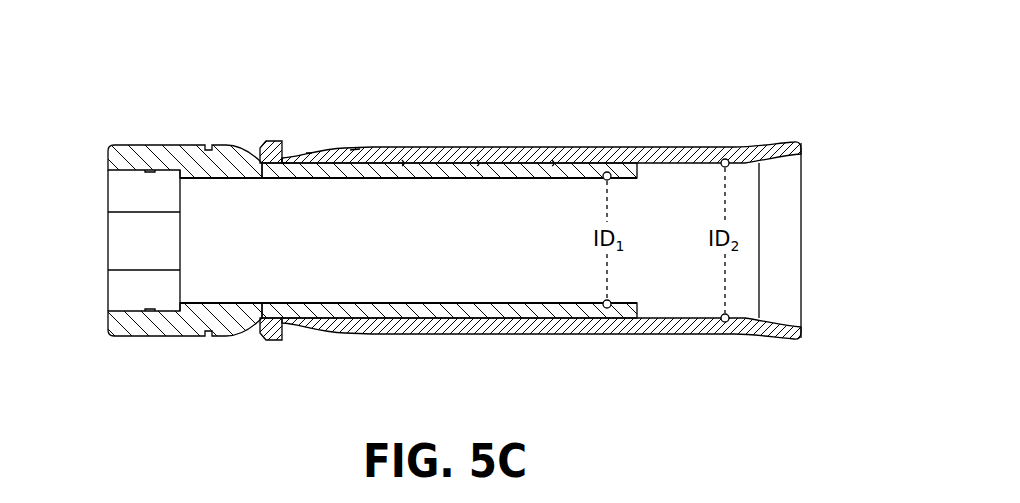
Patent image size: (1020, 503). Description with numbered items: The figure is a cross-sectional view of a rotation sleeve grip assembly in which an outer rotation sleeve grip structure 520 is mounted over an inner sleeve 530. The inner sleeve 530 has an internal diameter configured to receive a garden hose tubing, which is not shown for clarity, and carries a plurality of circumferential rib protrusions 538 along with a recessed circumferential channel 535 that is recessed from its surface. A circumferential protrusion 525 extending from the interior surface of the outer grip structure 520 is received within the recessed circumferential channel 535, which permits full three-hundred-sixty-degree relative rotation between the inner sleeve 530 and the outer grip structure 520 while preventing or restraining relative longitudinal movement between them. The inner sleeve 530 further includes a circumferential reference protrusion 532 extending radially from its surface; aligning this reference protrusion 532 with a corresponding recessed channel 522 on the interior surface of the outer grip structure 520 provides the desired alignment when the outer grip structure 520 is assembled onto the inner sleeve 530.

The outer rotation sleeve grip structure 520 is at (706, 147).
The recessed channel 522 is at (295, 152).
The circumferential protrusion 525 is at (370, 163).
The inner sleeve 530 is at (233, 147).
The circumferential reference protrusion 532 is at (261, 150).
The recessed circumferential channel 535 is at (367, 172).
The circumferential rib protrusions 538 is at (306, 153).